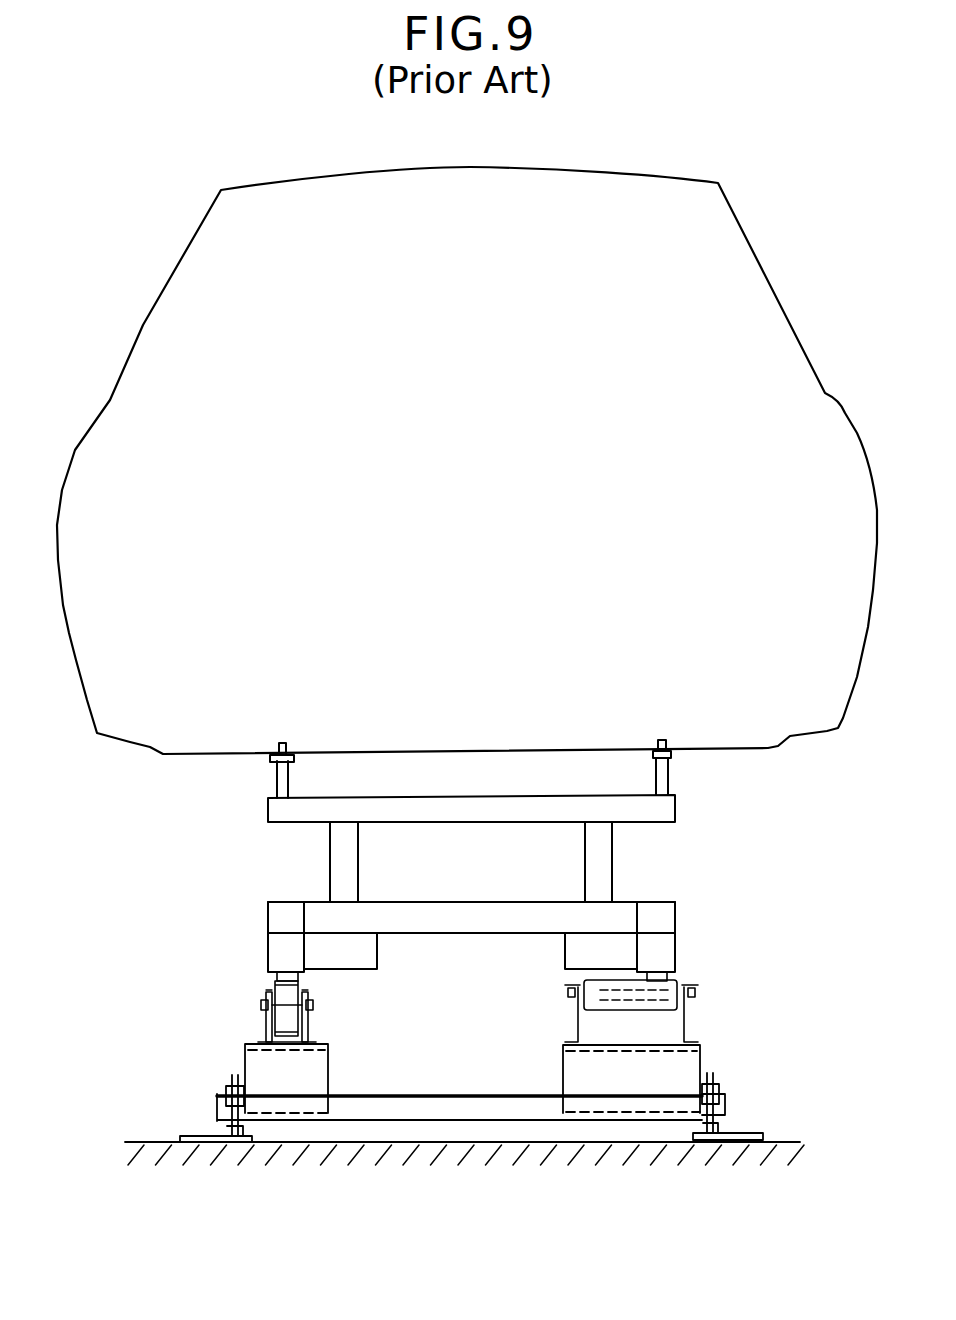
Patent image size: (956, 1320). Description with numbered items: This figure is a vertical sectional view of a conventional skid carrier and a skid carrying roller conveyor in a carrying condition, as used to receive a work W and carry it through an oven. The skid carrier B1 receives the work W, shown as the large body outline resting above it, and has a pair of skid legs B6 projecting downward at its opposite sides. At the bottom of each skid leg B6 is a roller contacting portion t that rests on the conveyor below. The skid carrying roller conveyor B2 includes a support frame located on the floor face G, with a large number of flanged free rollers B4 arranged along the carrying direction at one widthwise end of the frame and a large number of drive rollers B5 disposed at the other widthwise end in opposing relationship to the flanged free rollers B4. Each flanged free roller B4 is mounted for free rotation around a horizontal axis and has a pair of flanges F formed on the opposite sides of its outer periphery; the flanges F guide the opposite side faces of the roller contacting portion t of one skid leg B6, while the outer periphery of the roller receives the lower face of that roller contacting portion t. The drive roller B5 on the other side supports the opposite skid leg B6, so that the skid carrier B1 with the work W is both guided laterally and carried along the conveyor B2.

The work W is at (437, 167).
The skid carrier B1 is at (655, 895).
The skid legs B6 is at (278, 915).
The roller contacting portion t is at (288, 975).
The flanges F is at (277, 984).
The flanged free rollers B4 is at (285, 1010).
The drive rollers B5 is at (610, 1005).
The skid carrying roller conveyor B2 is at (726, 1063).
The ground G is at (778, 1147).